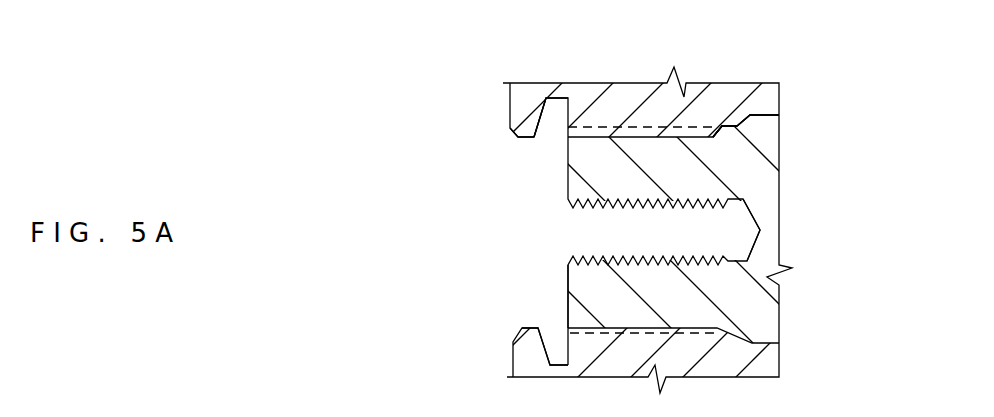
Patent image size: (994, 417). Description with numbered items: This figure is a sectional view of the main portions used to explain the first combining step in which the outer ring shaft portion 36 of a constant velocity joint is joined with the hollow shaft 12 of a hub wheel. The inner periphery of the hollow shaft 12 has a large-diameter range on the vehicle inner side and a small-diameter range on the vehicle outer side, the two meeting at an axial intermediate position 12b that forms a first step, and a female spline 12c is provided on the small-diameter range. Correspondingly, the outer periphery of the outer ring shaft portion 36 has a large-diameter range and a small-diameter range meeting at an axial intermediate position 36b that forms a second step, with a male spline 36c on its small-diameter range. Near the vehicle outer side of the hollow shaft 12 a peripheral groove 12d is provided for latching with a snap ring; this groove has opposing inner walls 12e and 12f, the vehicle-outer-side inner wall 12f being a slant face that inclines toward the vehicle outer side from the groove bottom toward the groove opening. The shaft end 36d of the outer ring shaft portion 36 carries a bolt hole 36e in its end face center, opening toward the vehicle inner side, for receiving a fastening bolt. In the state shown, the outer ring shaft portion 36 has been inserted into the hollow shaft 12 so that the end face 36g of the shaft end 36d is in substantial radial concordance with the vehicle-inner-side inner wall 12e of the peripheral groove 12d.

The hollow shaft 12 is at (638, 97).
The axial intermediate position 12b is at (747, 116).
The female spline 12c is at (695, 136).
The peripheral groove 12d is at (553, 123).
The inner wall 12e is at (552, 97).
The inner wall 12f is at (543, 110).
The outer ring shaft portion 36 is at (750, 303).
The axial intermediate position 36b is at (747, 116).
The male spline 36c is at (695, 136).
The shaft end 36d is at (568, 324).
The bolt hole 36e is at (600, 228).
The end face 36g is at (569, 284).